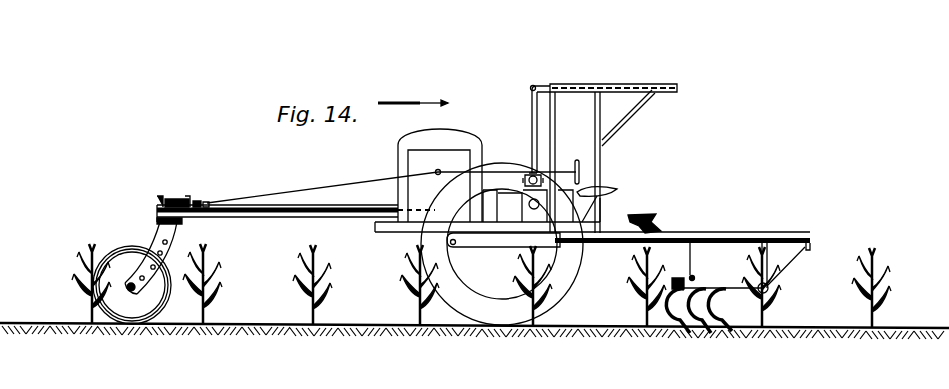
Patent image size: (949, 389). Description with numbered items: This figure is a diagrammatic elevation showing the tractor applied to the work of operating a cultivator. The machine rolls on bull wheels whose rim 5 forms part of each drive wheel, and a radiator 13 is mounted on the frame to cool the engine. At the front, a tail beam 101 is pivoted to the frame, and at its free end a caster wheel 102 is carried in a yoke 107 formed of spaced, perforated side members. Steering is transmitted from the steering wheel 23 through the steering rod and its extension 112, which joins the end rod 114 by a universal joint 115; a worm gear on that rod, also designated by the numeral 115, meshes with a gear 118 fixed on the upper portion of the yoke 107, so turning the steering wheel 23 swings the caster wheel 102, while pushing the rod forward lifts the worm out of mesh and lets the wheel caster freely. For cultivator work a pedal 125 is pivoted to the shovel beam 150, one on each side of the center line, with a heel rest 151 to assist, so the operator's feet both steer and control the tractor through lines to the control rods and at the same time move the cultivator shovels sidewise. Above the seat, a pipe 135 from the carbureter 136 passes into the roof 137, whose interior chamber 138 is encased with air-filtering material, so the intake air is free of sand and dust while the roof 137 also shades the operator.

The rim 5 is at (579, 275).
The radiator 13 is at (420, 138).
The steering wheel 23 is at (580, 167).
The tail beam 101 is at (306, 215).
The caster wheel 102 is at (119, 262).
The yoke 107 is at (172, 230).
The extension 112 is at (363, 180).
The end rod 114 is at (198, 201).
The universal joint 115 is at (209, 203).
The gear 118 is at (172, 198).
The pedal 125 is at (691, 276).
The pipe 135 is at (532, 106).
The carbureter 136 is at (530, 172).
The roof 137 is at (585, 83).
The interior chamber 138 is at (620, 84).
The shovel beam 150 is at (716, 287).
The heel rest 151 is at (672, 283).